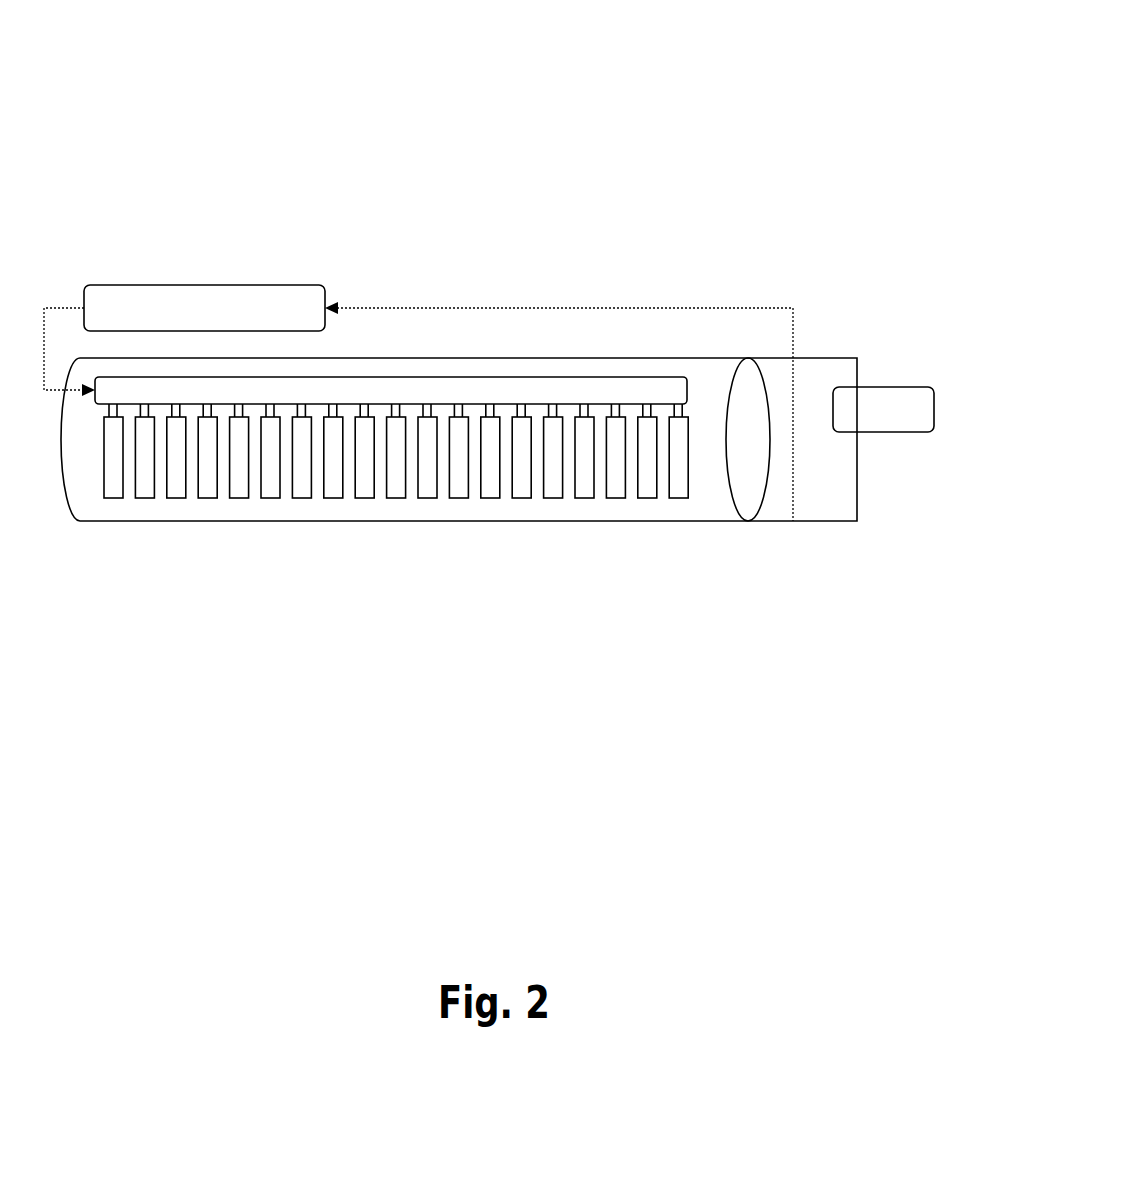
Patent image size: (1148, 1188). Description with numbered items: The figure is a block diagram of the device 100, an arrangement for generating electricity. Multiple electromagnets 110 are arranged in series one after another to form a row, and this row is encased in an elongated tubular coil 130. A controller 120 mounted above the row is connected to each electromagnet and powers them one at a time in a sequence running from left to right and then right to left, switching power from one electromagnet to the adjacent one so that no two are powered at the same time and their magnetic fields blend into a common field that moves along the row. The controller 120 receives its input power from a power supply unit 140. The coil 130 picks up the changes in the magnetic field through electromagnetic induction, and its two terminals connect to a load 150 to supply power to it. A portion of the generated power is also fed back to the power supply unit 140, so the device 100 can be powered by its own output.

The device 100 is at (740, 113).
The electromagnets 110 is at (293, 500).
The controller 120 is at (530, 375).
The elongated tubular coil 130 is at (583, 522).
The power supply unit 140 is at (292, 285).
The load 150 is at (910, 387).